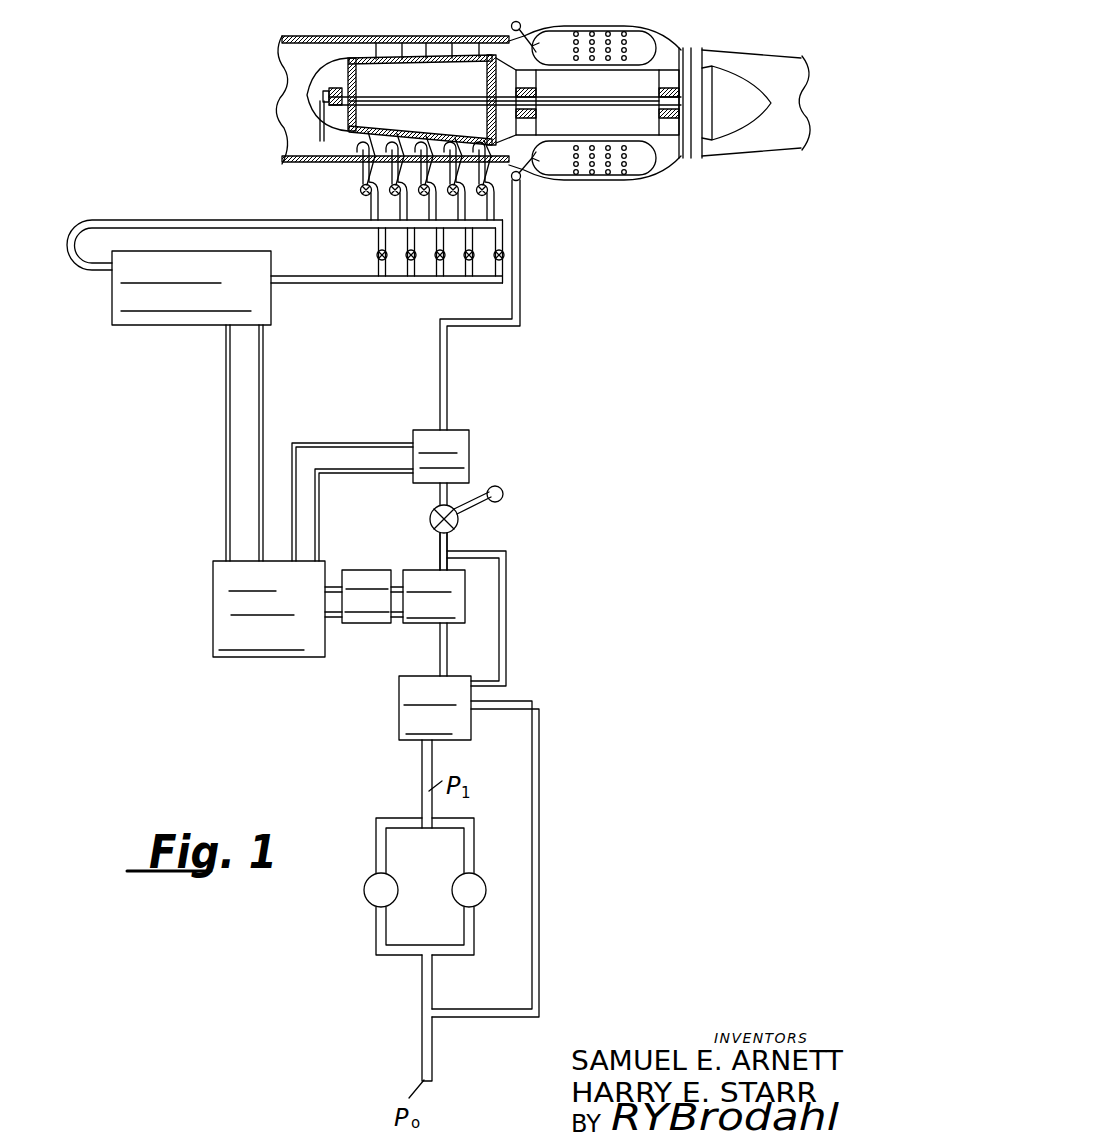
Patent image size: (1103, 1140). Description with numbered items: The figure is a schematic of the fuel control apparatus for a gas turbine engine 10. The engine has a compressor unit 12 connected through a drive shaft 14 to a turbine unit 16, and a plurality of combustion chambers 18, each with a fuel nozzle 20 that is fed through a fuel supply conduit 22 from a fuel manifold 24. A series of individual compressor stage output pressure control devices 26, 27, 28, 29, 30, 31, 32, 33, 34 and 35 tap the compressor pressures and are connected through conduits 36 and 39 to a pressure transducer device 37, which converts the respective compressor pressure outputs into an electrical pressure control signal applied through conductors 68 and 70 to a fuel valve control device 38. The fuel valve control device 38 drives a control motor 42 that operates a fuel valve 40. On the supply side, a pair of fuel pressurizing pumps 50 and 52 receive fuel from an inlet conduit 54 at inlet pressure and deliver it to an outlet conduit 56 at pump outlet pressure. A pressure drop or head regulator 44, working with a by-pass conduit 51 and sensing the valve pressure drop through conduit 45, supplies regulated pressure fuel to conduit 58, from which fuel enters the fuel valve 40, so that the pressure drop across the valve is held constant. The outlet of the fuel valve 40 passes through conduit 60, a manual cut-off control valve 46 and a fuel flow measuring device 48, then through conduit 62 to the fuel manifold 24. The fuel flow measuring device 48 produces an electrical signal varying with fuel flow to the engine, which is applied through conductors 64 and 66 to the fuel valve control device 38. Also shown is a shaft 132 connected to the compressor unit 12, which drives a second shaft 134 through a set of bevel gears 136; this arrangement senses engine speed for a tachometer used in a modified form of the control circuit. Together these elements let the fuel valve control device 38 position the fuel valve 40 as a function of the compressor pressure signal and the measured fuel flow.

The gas turbine engine 10 is at (458, 28).
The compressor unit 12 is at (368, 72).
The drive shaft 14 is at (430, 107).
The turbine unit 16 is at (701, 76).
The combustion chambers 18 is at (603, 43).
The fuel nozzle 20 is at (533, 50).
The fuel supply conduit 22 is at (520, 25).
The fuel manifold 24 is at (523, 183).
The compressor stage output pressure control device 26 is at (362, 194).
The compressor stage output pressure control device 27 is at (378, 258).
The compressor stage output pressure control device 28 is at (364, 120).
The compressor stage output pressure control device 29 is at (409, 263).
The compressor stage output pressure control device 30 is at (402, 120).
The compressor stage output pressure control device 31 is at (438, 263).
The compressor stage output pressure control device 32 is at (437, 120).
The compressor stage output pressure control device 33 is at (468, 263).
The compressor stage output pressure control device 34 is at (476, 141).
The compressor stage output pressure control device 35 is at (506, 258).
The conduit 36 is at (330, 285).
The pressure transducer device 37 is at (152, 325).
The fuel valve control device 38 is at (257, 661).
The conduit 39 is at (170, 223).
The fuel valve 40 is at (412, 626).
The control motor 42 is at (352, 626).
The head regulator 44 is at (402, 734).
The conduit 45 is at (505, 606).
The manual cut-off control valve 46 is at (462, 528).
The fuel flow measuring device 48 is at (470, 448).
The fuel supply pump 50 is at (388, 888).
The by-pass conduit 51 is at (541, 820).
The fuel supply pump 52 is at (474, 887).
The inlet conduit 54 is at (428, 983).
The outlet conduit 56 is at (428, 758).
The conduit 58 is at (441, 655).
The conduit 60 is at (440, 546).
The conduit 62 is at (523, 312).
The conductor 64 is at (346, 445).
The conductor 66 is at (346, 471).
The conductor 68 is at (227, 417).
The conductor 70 is at (266, 372).
The shaft 132 is at (338, 92).
The second shaft 134 is at (321, 130).
The bevel gears 136 is at (330, 98).